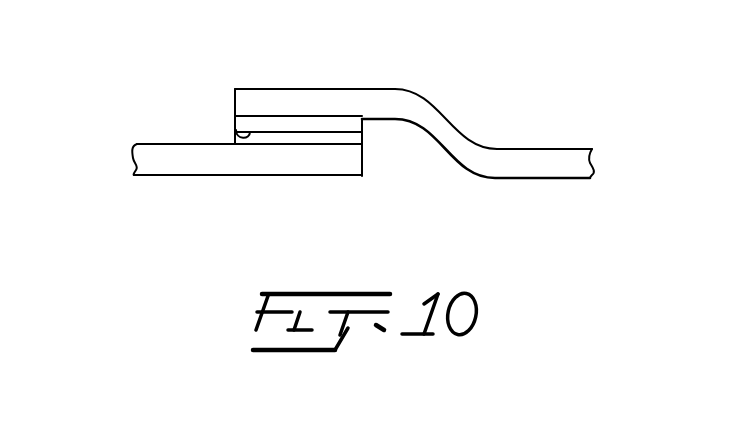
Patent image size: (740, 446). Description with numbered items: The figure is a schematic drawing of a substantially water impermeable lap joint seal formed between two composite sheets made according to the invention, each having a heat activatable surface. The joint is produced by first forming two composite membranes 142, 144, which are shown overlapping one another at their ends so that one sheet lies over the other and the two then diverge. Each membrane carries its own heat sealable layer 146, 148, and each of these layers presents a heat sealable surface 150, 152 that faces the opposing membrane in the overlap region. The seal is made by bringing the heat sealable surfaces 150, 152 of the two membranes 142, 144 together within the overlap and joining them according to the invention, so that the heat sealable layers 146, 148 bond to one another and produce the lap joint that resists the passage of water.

The composite membrane 142 is at (150, 160).
The composite membrane 144 is at (530, 162).
The heat sealable layer 146 is at (347, 140).
The heat sealable layer 148 is at (333, 120).
The heat sealable surface 150 is at (294, 127).
The heat sealable surface 152 is at (237, 130).